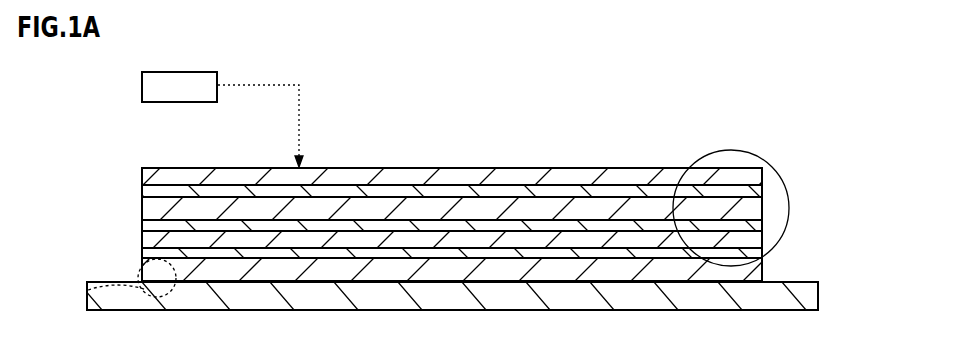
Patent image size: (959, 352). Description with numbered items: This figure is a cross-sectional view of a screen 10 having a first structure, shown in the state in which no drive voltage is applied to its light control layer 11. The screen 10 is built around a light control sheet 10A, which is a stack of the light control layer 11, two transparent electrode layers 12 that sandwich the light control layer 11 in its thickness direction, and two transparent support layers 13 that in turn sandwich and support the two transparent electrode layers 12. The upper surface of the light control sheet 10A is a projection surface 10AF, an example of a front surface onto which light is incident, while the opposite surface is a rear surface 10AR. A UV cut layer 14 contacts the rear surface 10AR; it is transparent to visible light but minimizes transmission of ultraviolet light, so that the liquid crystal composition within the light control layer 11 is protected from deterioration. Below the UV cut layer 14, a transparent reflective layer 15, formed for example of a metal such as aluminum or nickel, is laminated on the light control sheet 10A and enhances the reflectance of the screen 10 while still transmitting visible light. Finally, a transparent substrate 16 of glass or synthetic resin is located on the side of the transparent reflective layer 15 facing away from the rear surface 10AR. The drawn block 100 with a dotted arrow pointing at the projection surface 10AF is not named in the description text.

The screen 10 is at (444, 202).
The light control sheet 10A is at (428, 199).
The projection surface 10AF is at (237, 166).
The rear surface 10AR is at (88, 290).
The light control layer 11 is at (141, 208).
The transparent electrode layers 12 is at (141, 191).
The transparent support layers 13 is at (140, 176).
The UV cut layer 14 is at (765, 250).
The transparent reflective layer 15 is at (764, 269).
The transparent substrate 16 is at (817, 291).
The light source / measurement device 100 is at (141, 84).